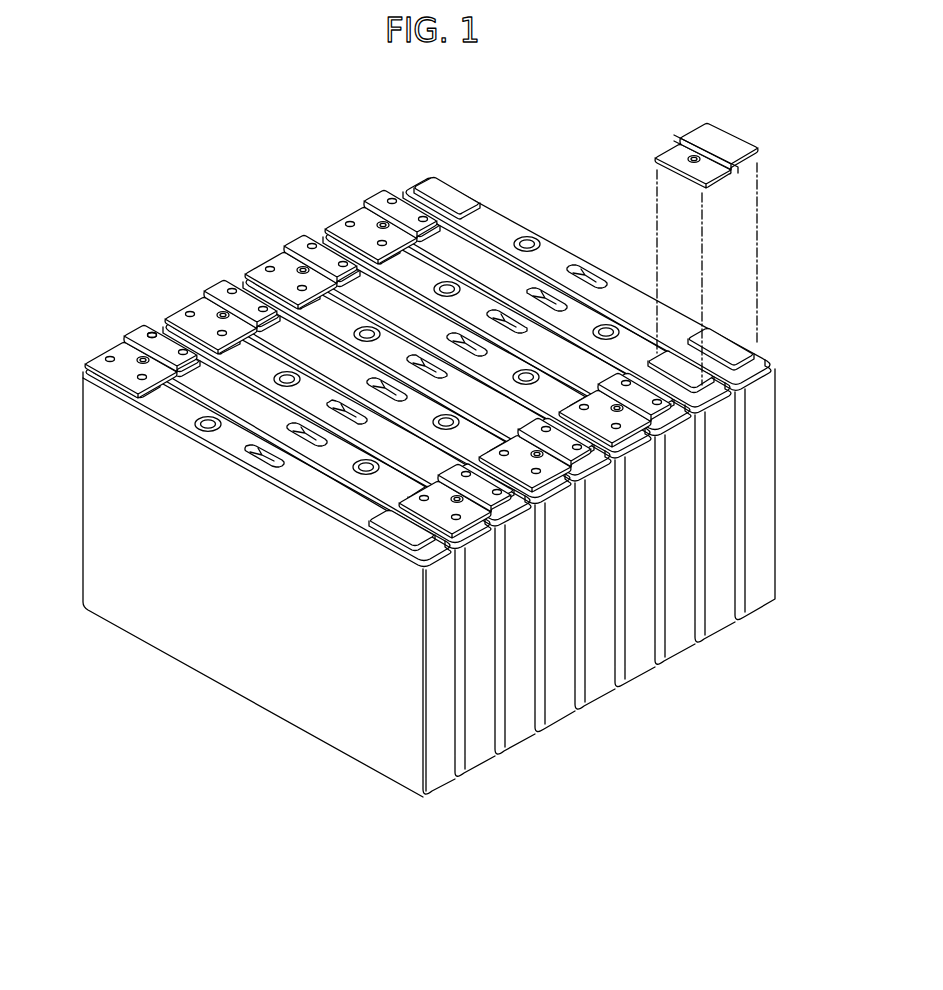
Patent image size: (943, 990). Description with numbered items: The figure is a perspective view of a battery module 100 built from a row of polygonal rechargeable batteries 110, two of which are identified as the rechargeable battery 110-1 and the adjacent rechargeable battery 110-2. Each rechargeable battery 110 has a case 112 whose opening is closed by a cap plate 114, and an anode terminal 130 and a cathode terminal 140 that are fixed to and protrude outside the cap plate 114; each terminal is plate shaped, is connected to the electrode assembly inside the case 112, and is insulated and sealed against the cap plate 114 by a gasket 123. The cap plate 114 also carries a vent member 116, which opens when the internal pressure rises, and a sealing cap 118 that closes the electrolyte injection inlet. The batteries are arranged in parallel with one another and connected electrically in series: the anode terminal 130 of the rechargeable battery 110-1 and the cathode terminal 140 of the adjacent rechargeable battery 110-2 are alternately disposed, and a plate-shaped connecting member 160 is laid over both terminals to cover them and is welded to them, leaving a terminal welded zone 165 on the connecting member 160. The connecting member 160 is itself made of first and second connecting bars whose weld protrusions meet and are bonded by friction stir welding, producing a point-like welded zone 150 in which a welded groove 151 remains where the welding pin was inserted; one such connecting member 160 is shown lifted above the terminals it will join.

The battery module 100 is at (258, 240).
The rechargeable battery 110 is at (297, 602).
The rechargeable battery 110-1 is at (716, 622).
The rechargeable battery 110-2 is at (757, 598).
The case 112 is at (365, 748).
The cap plate 114 is at (320, 487).
The vent member 116 is at (247, 462).
The sealing cap 118 is at (200, 429).
The gasket 123 is at (762, 356).
The anode terminal 130 is at (450, 190).
The cathode terminal 140 is at (408, 533).
The welded zone 150 is at (742, 148).
The welded groove 151 is at (706, 152).
The connecting member 160 is at (140, 348).
The terminal welded zone 165 is at (157, 335).